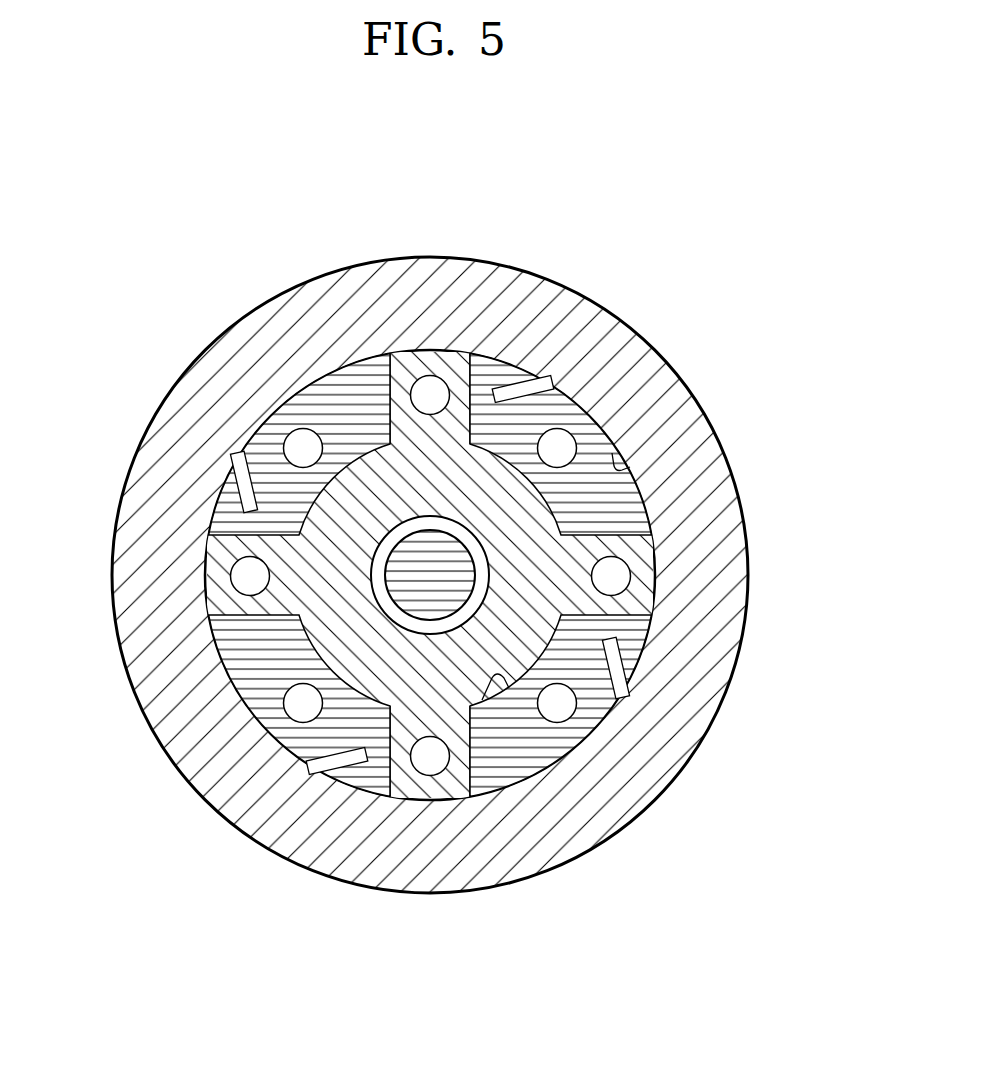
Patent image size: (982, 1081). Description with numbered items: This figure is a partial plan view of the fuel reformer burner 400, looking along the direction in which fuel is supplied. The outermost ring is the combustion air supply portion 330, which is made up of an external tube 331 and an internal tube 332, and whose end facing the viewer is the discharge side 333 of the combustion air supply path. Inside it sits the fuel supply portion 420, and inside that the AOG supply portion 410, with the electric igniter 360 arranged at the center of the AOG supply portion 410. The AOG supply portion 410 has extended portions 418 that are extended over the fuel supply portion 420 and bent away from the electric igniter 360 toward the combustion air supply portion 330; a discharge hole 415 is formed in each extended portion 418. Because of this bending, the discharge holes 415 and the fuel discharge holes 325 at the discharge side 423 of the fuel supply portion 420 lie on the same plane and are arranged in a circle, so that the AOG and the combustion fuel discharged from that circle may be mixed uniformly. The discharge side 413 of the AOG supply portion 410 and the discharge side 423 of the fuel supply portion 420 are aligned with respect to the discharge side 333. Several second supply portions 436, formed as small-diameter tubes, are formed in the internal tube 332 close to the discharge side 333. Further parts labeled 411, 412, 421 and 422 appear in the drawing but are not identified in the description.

The fuel reformer burner 400 is at (142, 271).
The combustion air supply portion 330 is at (628, 195).
The external tube 331 is at (580, 287).
The internal tube 332 is at (498, 350).
The discharge side 333 is at (153, 513).
The electric igniter 360 is at (415, 563).
The AOG supply portion 410 is at (624, 945).
The rotor core outer portion 411 is at (540, 767).
The shaft hole 412 is at (455, 632).
The discharge side 413 is at (381, 667).
The discharge hole 415 is at (635, 577).
The extended portion 418 is at (388, 397).
The fuel supply portion 420 is at (818, 398).
The first magnet 421 is at (640, 470).
The second magnet 422 is at (590, 517).
The discharge side 423 is at (260, 667).
The second supply portions 436 is at (522, 400).
The fuel discharge holes 325 is at (570, 717).